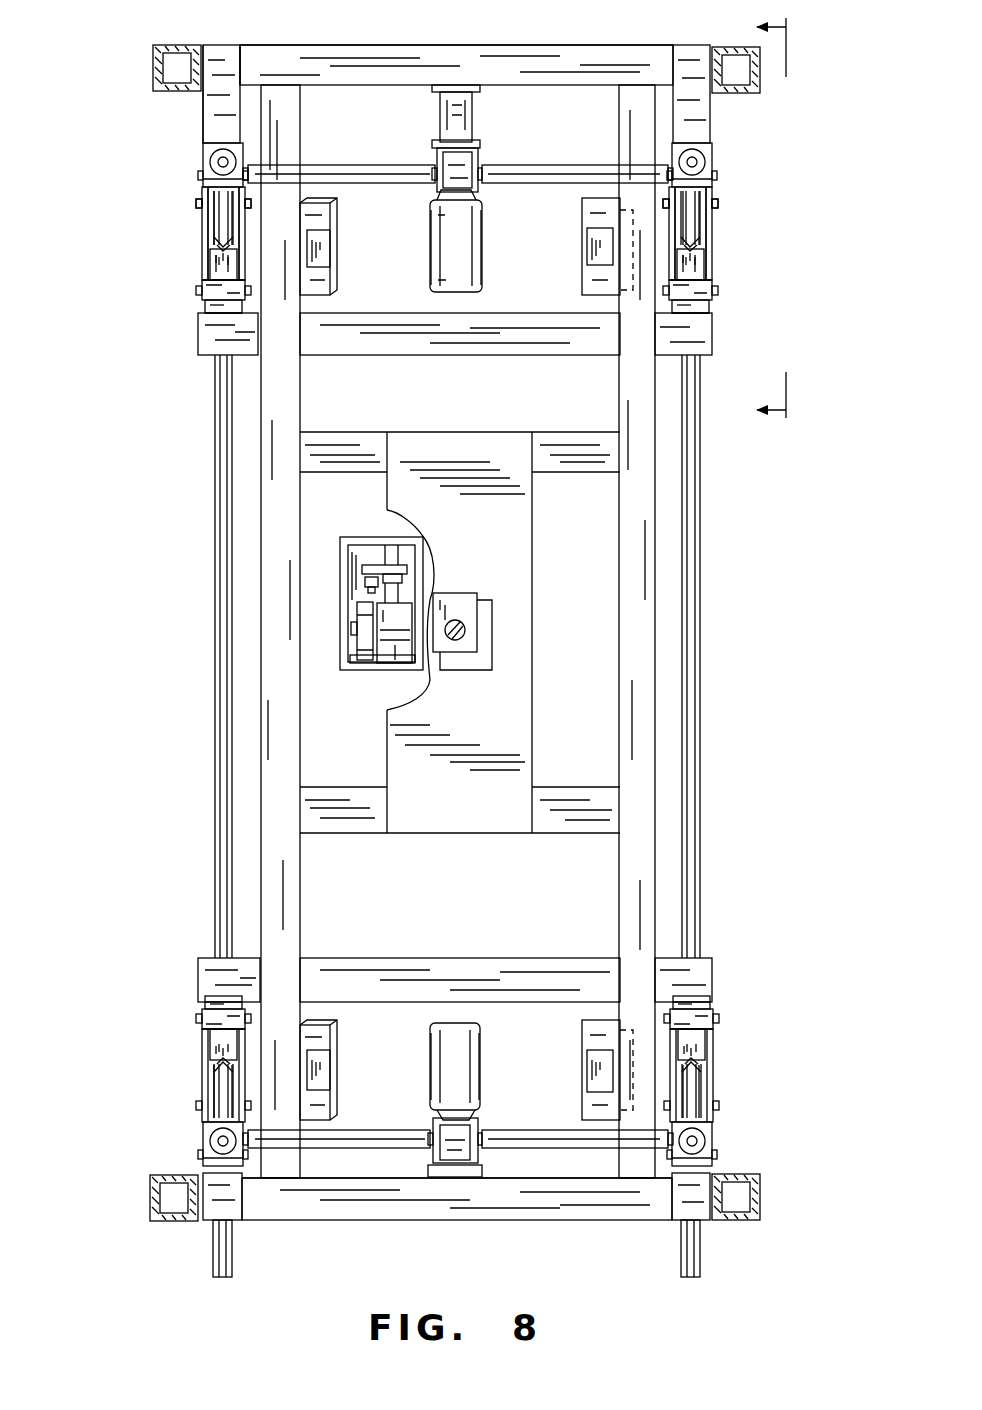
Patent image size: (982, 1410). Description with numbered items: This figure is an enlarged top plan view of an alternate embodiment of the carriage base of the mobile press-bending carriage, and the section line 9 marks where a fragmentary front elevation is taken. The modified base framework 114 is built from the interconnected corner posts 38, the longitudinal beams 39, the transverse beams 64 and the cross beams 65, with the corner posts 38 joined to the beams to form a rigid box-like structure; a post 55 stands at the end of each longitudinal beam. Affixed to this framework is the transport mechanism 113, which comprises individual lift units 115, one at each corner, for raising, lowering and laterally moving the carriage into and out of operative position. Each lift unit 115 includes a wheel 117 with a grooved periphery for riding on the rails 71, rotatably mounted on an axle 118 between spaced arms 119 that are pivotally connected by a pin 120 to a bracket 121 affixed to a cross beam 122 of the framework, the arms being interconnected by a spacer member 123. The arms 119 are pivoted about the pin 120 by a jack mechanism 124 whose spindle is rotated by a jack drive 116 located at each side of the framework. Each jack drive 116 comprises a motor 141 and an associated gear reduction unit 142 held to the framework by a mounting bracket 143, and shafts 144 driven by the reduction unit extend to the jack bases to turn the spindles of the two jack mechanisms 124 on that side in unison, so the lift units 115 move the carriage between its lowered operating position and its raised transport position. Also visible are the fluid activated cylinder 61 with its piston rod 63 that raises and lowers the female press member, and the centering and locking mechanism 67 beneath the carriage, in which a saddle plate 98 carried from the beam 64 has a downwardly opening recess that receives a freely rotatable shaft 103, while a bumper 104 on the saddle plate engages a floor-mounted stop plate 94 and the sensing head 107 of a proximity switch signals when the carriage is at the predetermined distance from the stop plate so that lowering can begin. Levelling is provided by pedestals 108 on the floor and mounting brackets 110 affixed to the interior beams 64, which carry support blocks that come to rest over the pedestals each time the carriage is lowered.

The section line 9— 9 is at (785, 224).
The corner posts 38 is at (170, 47).
The longitudinal beams 39 is at (385, 60).
The end post 55 is at (205, 62).
The fluid activated cylinder 61 is at (474, 652).
The piston rod 63 is at (458, 622).
The transverse beams 64 is at (290, 882).
The cross beams 65 is at (355, 440).
The centering and locking mechanism 67 is at (362, 675).
The rails 71 is at (222, 688).
The stop plate 94 is at (380, 565).
The saddle plate 98 is at (405, 655).
The shaft 103 is at (350, 628).
The bumper 104 is at (407, 575).
The sensing head 107 is at (362, 580).
The pedestal 108 is at (597, 287).
The mounting brackets 110 is at (590, 240).
The transport mechanism 113 is at (760, 1102).
The base framework 114 is at (560, 45).
The lift units 115 is at (203, 252).
The jack drives 116 is at (432, 240).
The wheel 117 is at (215, 232).
The axle 118 is at (200, 202).
The spaced arms 119 is at (208, 245).
The pin 120 is at (200, 293).
The bracket 121 is at (206, 310).
The cross beam 122 is at (210, 347).
The spacer member 123 is at (222, 285).
The jack mechanism 124 is at (200, 160).
The motor 141 is at (478, 262).
The gear reduction unit 142 is at (468, 165).
The mounting bracket 143 is at (440, 122).
The shafts 144 is at (357, 165).